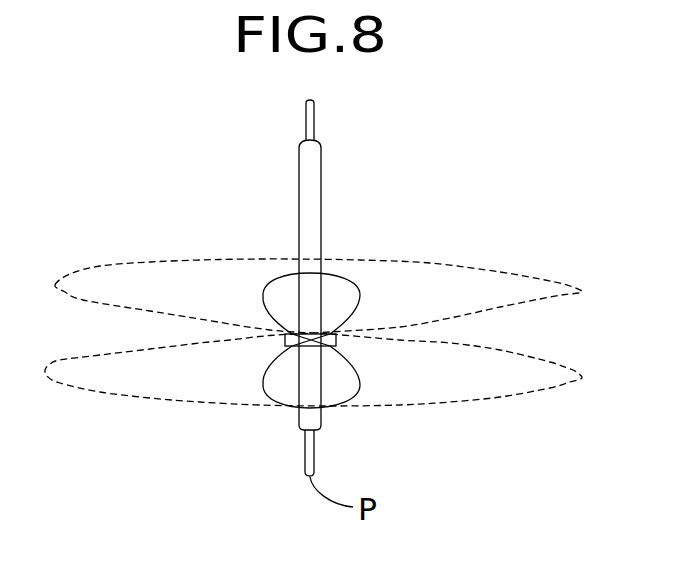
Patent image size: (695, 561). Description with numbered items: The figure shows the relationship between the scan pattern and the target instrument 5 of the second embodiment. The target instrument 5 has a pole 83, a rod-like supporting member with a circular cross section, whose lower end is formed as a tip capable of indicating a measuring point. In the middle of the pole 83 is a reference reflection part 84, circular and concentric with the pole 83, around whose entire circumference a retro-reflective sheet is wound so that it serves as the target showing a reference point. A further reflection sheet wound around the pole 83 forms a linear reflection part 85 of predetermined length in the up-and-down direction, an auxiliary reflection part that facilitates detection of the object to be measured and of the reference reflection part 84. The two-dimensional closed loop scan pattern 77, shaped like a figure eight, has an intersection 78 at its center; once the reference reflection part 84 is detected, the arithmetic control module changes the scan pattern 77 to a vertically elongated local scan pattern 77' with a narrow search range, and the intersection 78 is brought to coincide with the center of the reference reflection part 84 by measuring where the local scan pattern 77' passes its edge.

The target instrument 5 is at (300, 288).
The scan pattern 77 is at (313, 294).
The local scan pattern 77' is at (385, 313).
The intersection 78 is at (313, 338).
The pole 83 is at (305, 453).
The reference reflection part 84 is at (337, 339).
The linear reflection part 85 is at (321, 218).